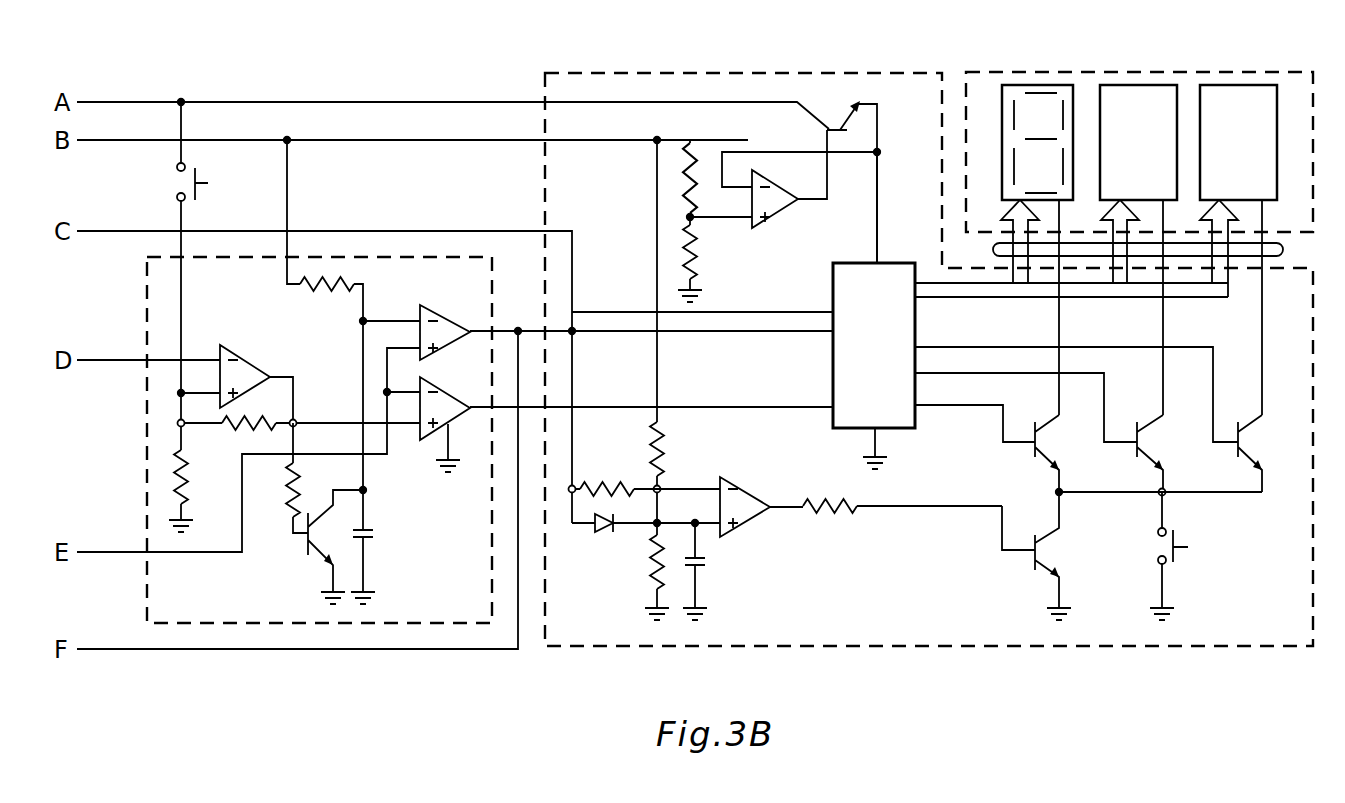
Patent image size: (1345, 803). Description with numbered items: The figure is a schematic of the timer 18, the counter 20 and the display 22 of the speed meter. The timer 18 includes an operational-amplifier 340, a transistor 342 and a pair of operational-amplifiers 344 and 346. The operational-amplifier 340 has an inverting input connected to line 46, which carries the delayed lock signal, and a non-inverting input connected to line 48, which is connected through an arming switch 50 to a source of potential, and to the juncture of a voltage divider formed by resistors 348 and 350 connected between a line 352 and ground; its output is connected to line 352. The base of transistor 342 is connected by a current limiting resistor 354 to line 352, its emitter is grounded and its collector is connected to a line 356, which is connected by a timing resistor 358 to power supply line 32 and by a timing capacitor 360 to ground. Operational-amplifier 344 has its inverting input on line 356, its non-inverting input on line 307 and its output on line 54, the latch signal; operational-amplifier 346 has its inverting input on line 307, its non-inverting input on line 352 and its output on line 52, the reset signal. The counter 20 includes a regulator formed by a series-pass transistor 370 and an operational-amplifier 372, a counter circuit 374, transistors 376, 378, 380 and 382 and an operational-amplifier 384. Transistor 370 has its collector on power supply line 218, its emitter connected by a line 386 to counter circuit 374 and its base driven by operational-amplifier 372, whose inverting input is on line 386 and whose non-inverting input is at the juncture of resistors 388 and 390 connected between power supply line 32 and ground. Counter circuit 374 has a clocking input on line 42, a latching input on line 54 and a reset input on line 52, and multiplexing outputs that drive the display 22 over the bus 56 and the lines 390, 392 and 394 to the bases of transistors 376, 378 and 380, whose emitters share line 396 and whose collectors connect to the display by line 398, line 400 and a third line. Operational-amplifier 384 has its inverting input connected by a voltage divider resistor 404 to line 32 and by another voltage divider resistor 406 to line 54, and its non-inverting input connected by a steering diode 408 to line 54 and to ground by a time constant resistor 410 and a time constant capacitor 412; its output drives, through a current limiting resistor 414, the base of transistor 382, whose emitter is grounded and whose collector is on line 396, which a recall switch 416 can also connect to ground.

The timer 18 is at (146, 614).
The counter 20 is at (545, 74).
The display 22 is at (1246, 74).
The power supply line 218 is at (300, 104).
The power supply line 32 is at (318, 141).
The line 42 is at (318, 232).
The line 46 is at (118, 351).
The line 48 is at (188, 218).
The arming switch 50 is at (197, 178).
The line 52 is at (590, 408).
The line 54 is at (597, 334).
The bus 56 is at (1284, 251).
The line 307 is at (165, 554).
The operational-amplifier 340 is at (230, 359).
The transistor 342 is at (307, 554).
The operational-amplifier 344 is at (456, 320).
The operational-amplifier 346 is at (458, 392).
The resistor 348 is at (240, 423).
The resistor 350 is at (186, 483).
The line 352 is at (298, 424).
The current limiting resistor 354 is at (300, 489).
The line 356 is at (362, 380).
The timing resistor 358 is at (305, 298).
The timing capacitor 360 is at (373, 535).
The series-pass transistor 370 is at (825, 130).
The operational-amplifier 372 is at (777, 229).
The counter circuit 374 is at (874, 366).
The transistor 376 is at (1050, 437).
The transistor 378 is at (1148, 437).
The transistor 380 is at (1250, 437).
The transistor 382 is at (1040, 558).
The operational-amplifier 384 is at (765, 492).
The line 386 is at (880, 203).
The resistor 388 is at (684, 180).
The resistor 390 is at (698, 260).
The line 392 is at (954, 374).
The line 394 is at (954, 347).
The line 396 is at (1200, 494).
The line 398 is at (1061, 330).
The line 400 is at (1158, 314).
The voltage divider resistor 404 is at (662, 451).
The voltage divider resistor 406 is at (610, 483).
The steering diode 408 is at (596, 533).
The time constant resistor 410 is at (650, 560).
The time constant capacitor 412 is at (706, 565).
The current limiting resistor 414 is at (834, 500).
The recall switch 416 is at (1188, 547).